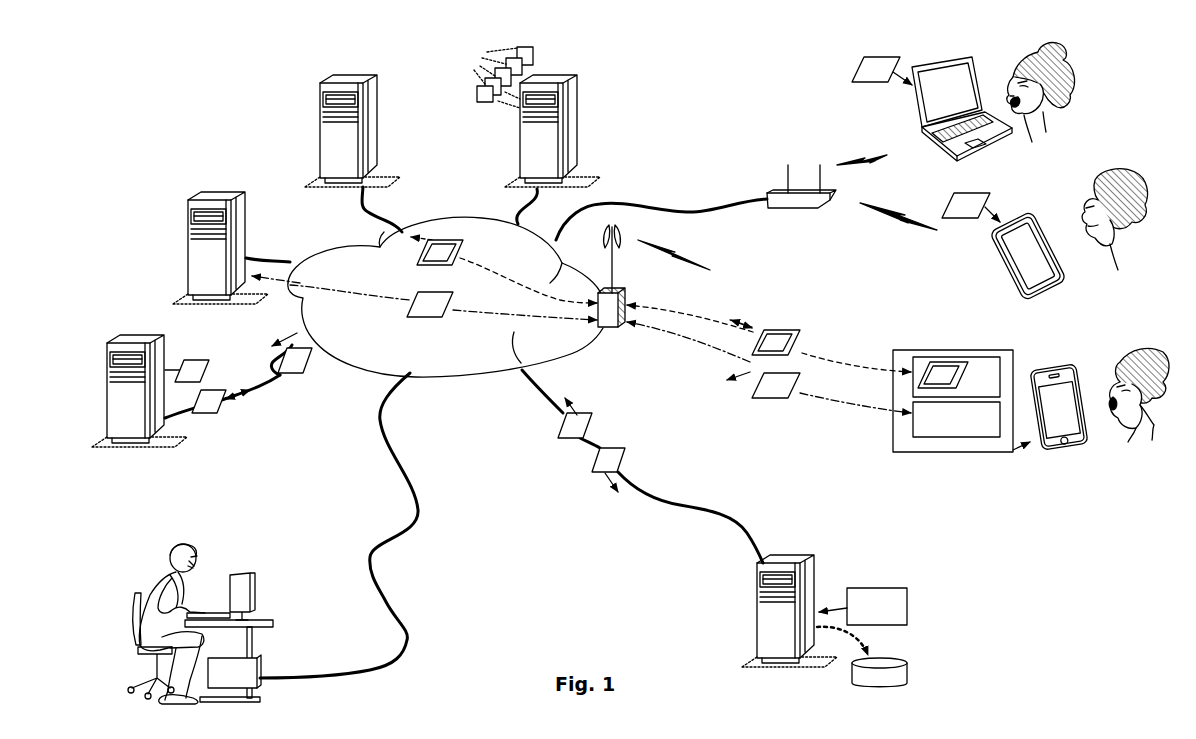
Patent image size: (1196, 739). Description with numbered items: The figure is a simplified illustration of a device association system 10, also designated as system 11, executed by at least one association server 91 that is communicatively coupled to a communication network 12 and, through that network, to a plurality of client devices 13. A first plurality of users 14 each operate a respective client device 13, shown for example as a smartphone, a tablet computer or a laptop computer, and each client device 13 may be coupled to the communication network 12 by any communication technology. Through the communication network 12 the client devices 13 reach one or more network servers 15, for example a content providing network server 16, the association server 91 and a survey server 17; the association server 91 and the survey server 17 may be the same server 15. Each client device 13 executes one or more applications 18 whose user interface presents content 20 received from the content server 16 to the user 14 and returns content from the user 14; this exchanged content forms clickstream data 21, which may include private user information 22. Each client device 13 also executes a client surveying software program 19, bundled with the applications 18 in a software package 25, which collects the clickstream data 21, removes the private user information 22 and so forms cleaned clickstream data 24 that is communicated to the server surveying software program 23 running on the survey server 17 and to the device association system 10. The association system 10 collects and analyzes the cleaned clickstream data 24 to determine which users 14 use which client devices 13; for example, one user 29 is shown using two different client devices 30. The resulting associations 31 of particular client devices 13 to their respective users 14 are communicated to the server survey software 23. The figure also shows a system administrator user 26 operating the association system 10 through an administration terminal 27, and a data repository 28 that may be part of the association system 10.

The device association system 10 is at (890, 578).
The device association system 11 is at (921, 401).
The communication network 12 is at (450, 375).
The client device 13 is at (916, 102).
The first user 14 is at (1033, 155).
The network server 15 is at (378, 105).
The content providing network server 16 is at (378, 144).
The survey server 17 is at (107, 383).
The application 18 is at (911, 390).
The client surveying software program 19 is at (911, 426).
The content 20 is at (491, 76).
The clickstream data 21 is at (458, 238).
The private user information 22 is at (440, 241).
The server surveying software program 23 is at (194, 362).
The cleaned clickstream data 24 is at (208, 418).
The software package 25 is at (854, 62).
The user 26 is at (183, 551).
The administration terminal 27 is at (262, 670).
The data repository 28 is at (897, 660).
The user 29 is at (1066, 118).
The client devices 30 is at (920, 131).
The associations 31 is at (298, 376).
The association server 91 is at (752, 603).